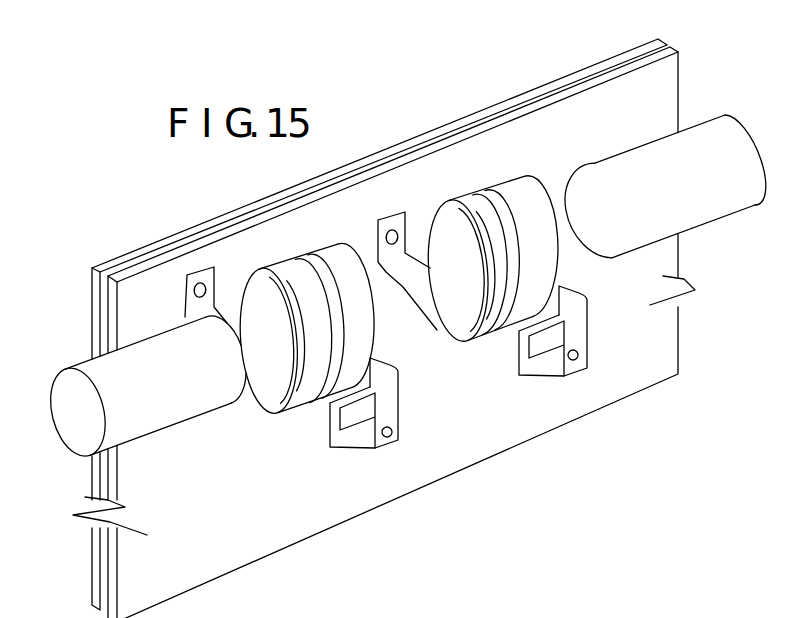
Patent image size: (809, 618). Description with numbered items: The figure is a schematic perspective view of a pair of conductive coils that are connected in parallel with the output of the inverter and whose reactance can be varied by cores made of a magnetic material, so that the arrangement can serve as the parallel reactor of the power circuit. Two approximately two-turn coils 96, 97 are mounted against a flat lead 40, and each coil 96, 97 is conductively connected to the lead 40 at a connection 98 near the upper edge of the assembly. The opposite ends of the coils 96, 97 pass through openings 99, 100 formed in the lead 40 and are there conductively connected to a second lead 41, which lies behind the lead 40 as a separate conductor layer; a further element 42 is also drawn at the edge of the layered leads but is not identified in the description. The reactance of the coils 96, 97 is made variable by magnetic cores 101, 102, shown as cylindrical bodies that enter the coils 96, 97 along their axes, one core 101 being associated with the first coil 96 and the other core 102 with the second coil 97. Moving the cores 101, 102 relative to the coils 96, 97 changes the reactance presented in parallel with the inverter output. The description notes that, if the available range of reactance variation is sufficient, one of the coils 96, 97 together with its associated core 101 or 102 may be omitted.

The lead 40 is at (322, 197).
The lead 41 is at (168, 240).
The front board layer 42 is at (247, 217).
The coil 96 is at (358, 337).
The coil 97 is at (547, 270).
The connection 98 is at (208, 283).
The opening 99 is at (330, 428).
The opening 100 is at (522, 347).
The magnetic core 101 is at (155, 415).
The magnetic core 102 is at (697, 220).